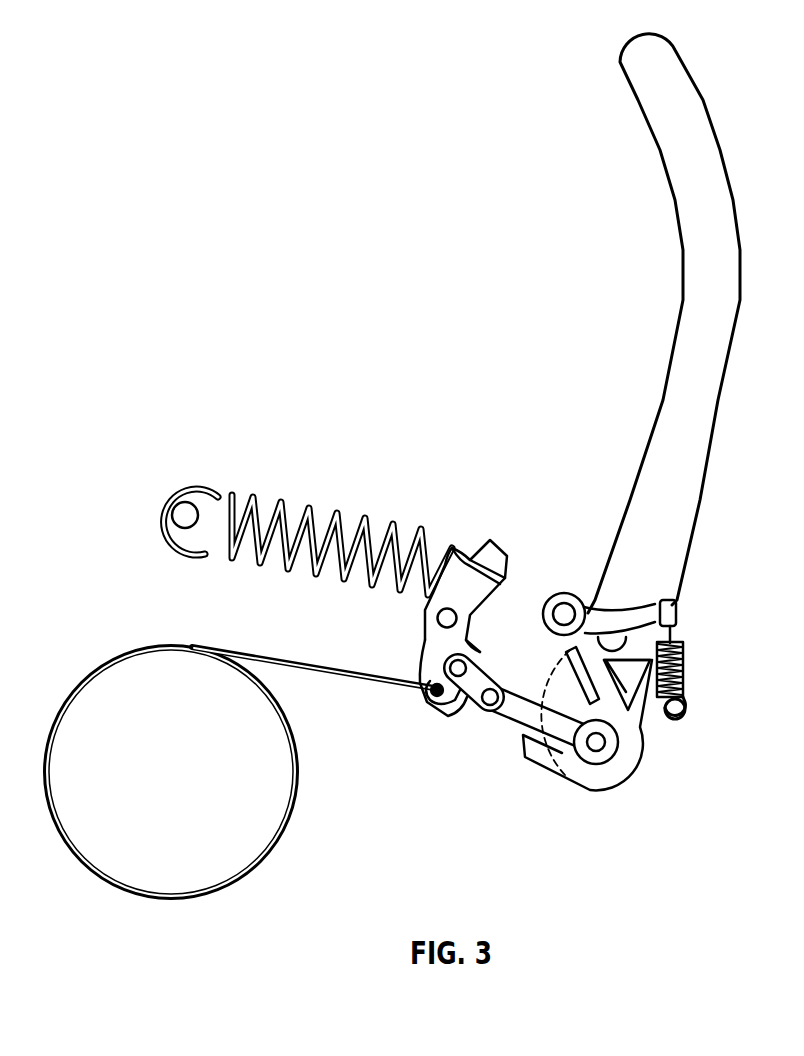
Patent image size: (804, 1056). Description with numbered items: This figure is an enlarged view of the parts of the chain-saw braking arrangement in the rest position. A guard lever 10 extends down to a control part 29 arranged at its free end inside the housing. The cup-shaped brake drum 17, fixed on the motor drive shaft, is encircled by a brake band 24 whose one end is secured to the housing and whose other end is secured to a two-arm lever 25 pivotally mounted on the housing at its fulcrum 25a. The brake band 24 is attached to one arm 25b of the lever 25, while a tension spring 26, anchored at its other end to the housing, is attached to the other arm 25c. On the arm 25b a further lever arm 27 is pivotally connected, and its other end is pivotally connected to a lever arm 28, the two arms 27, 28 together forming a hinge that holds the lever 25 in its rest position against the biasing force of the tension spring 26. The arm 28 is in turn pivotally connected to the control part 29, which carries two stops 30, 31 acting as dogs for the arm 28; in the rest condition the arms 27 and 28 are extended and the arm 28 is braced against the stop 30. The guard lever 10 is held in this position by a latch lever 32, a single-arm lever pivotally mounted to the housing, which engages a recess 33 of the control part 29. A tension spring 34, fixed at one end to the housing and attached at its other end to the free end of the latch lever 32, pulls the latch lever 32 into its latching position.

The guard lever 10 is at (658, 120).
The brake drum 17 is at (248, 866).
The brake band 24 is at (360, 676).
The lever 25 is at (505, 550).
The fulcrum 25a is at (443, 618).
The arm 25b is at (433, 653).
The arm 25c is at (468, 585).
The tension spring 26 is at (255, 496).
The lever arm 27 is at (428, 712).
The lever arm 28 is at (500, 722).
The control part 29 is at (640, 757).
The stop 30 is at (525, 755).
The stop 31 is at (572, 680).
The latch lever 32 is at (617, 640).
The recess 33 is at (648, 718).
The tension spring 34 is at (684, 668).